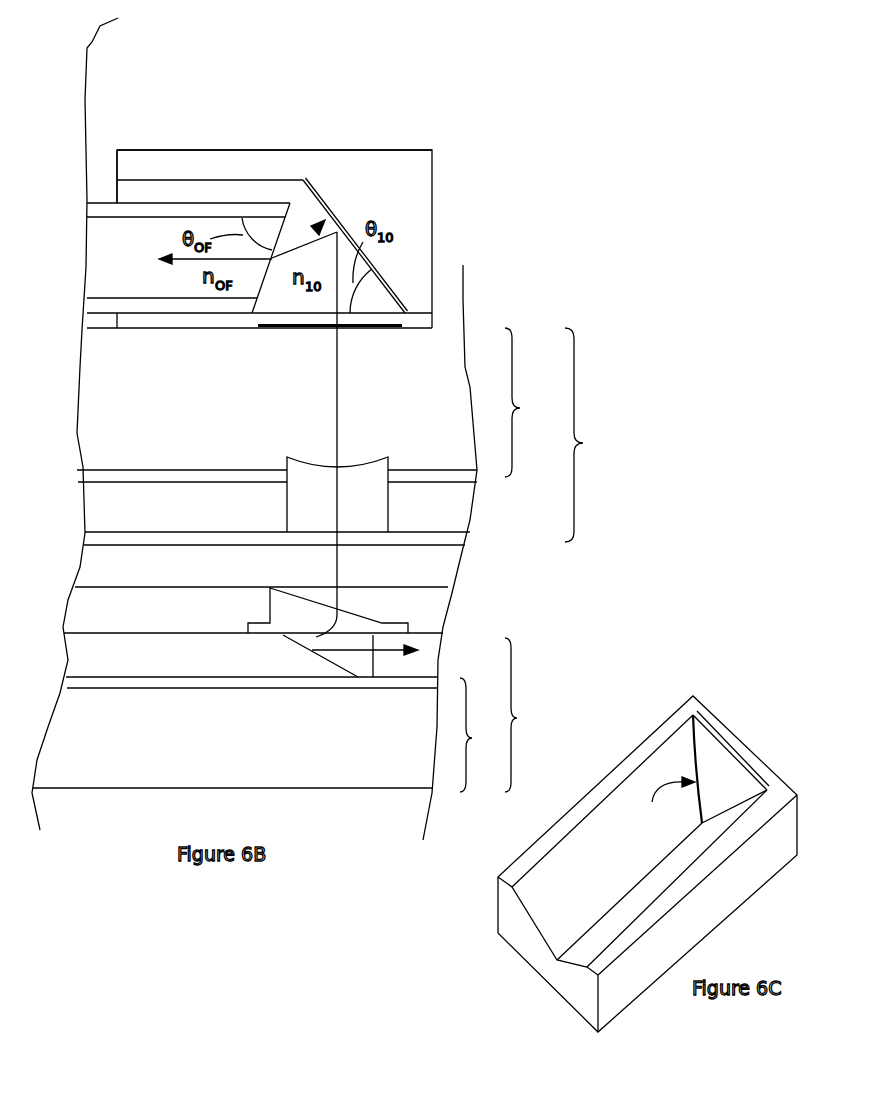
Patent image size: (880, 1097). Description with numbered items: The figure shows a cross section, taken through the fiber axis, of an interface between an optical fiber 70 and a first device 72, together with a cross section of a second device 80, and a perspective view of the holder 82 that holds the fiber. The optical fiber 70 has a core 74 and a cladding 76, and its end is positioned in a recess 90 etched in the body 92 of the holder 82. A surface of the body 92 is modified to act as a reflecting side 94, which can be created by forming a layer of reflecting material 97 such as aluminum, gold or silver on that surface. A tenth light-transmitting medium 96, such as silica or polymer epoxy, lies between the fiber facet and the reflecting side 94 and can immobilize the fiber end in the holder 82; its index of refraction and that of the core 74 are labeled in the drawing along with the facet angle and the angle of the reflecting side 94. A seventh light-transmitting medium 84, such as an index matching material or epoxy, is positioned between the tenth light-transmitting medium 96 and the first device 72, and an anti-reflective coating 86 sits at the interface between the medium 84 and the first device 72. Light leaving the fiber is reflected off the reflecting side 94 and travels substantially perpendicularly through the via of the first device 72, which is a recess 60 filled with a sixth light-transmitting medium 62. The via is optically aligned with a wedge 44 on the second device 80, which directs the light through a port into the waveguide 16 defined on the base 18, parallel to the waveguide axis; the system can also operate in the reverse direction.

In FIG. 6B, the optical fiber 70 is at (103, 158).
In FIG. 6B, the holder 82 is at (273, 150).
In FIG. 6C, the holder 82 is at (690, 678).
In FIG. 6B, the body 92 is at (373, 160).
In FIG. 6C, the body 92 is at (512, 915).
In FIG. 6B, the recess 90 is at (197, 180).
In FIG. 6C, the recess 90 is at (570, 903).
In FIG. 6B, the layer of reflecting material 97 is at (302, 191).
In FIG. 6C, the layer of reflecting material 97 is at (718, 783).
In FIG. 6B, the core 74 is at (107, 209).
In FIG. 6B, the cladding 76 is at (108, 255).
In FIG. 6B, the tenth light-transmitting medium 96 is at (384, 308).
In FIG. 6B, the seventh light-transmitting medium 84 is at (157, 320).
In FIG. 6B, the anti-reflective coating 86 is at (260, 326).
In FIG. 6B, the recess 60 is at (288, 505).
In FIG. 6B, the sixth light-transmitting medium 62 is at (317, 490).
In FIG. 6B, the wedge 44 is at (248, 623).
In FIG. 6B, the waveguide 16 is at (408, 670).
In FIG. 6B, the base 18 is at (506, 560).
In FIG. 6B, the first device 72 is at (590, 435).
In FIG. 6B, the second device 80 is at (529, 715).
In FIG. 6C, the reflecting side 94 is at (662, 799).